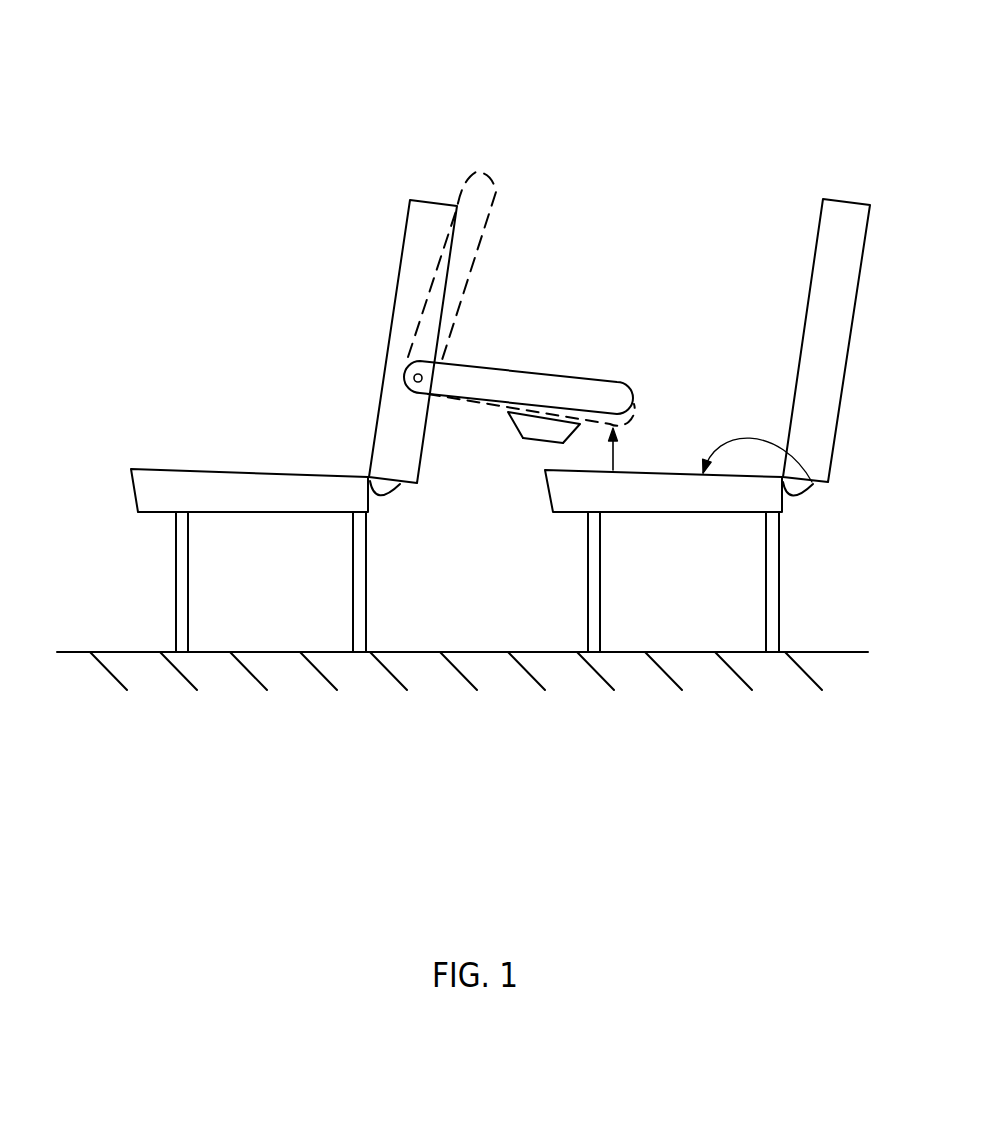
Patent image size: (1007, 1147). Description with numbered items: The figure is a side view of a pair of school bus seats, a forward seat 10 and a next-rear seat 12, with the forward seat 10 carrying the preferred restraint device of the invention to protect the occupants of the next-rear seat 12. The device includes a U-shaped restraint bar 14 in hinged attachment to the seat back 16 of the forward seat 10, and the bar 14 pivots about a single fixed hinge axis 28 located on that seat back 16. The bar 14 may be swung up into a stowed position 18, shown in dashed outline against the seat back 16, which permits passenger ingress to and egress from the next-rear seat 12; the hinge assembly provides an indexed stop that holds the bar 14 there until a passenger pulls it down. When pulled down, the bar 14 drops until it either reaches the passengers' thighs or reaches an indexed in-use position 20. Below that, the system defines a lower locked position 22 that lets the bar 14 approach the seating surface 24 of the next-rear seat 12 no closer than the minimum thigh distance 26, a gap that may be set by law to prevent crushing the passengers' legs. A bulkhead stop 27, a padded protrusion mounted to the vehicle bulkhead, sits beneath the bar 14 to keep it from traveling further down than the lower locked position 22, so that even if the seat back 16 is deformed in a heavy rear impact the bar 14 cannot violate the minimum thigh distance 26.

The forward seat 10 is at (324, 350).
The next-rear seat 12 is at (723, 350).
The U-shaped restraint bar 14 is at (470, 345).
The seat back 16 is at (415, 266).
The stowed position 18 is at (495, 187).
The indexed in-use position 20 is at (580, 403).
The lower locked position 22 is at (627, 425).
The seating surface 24 is at (805, 478).
The minimum thigh distance 26 is at (613, 450).
The bulkhead stop 27 is at (523, 437).
The single fixed hinge axis 28 is at (414, 379).